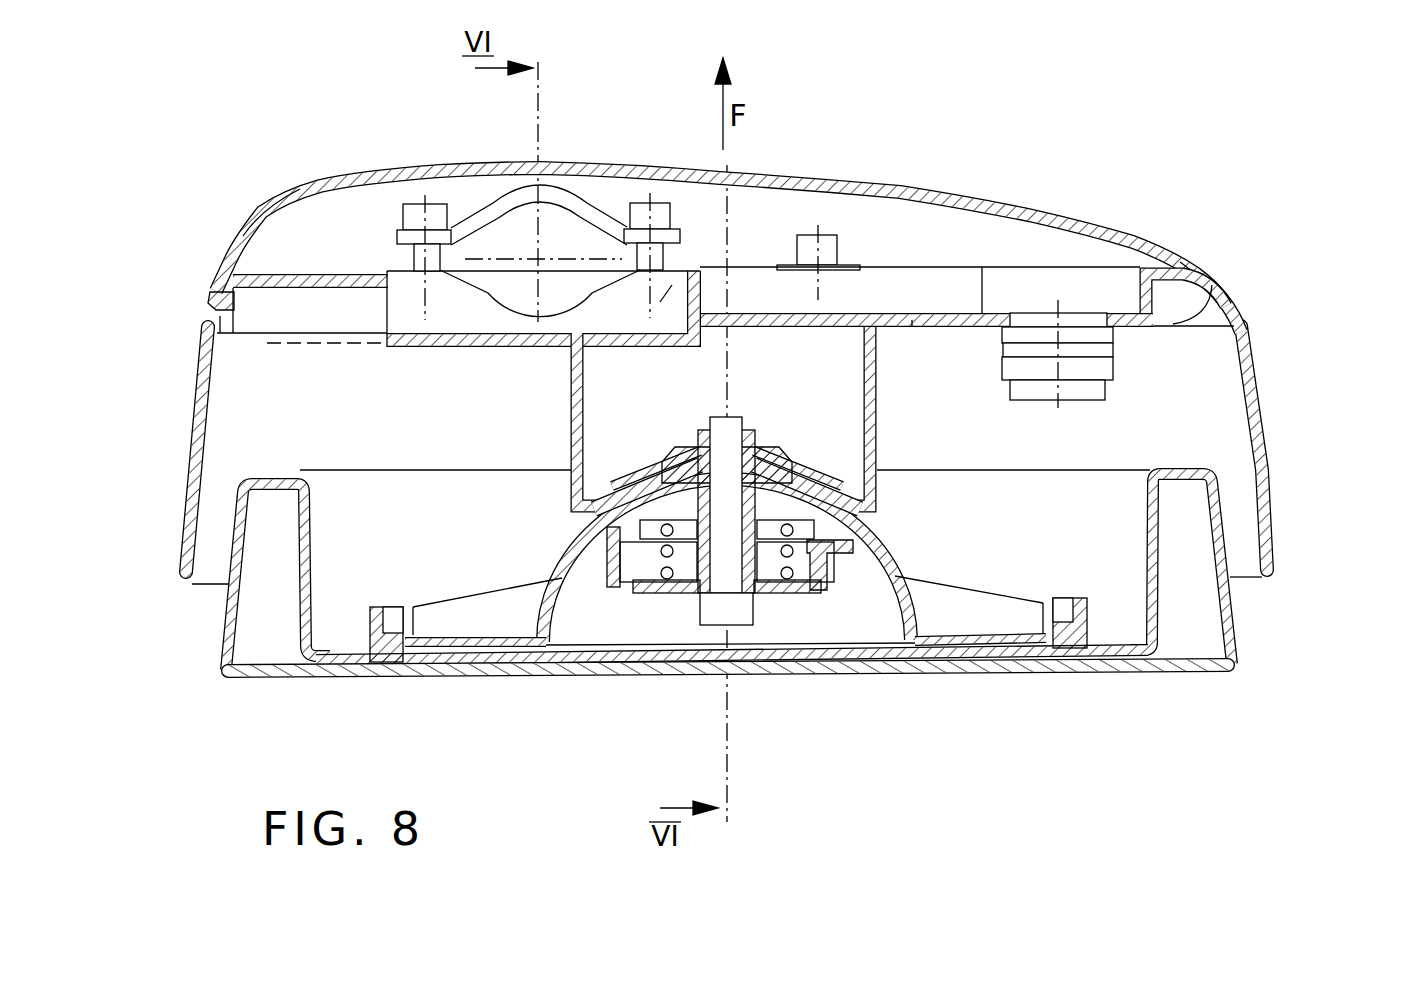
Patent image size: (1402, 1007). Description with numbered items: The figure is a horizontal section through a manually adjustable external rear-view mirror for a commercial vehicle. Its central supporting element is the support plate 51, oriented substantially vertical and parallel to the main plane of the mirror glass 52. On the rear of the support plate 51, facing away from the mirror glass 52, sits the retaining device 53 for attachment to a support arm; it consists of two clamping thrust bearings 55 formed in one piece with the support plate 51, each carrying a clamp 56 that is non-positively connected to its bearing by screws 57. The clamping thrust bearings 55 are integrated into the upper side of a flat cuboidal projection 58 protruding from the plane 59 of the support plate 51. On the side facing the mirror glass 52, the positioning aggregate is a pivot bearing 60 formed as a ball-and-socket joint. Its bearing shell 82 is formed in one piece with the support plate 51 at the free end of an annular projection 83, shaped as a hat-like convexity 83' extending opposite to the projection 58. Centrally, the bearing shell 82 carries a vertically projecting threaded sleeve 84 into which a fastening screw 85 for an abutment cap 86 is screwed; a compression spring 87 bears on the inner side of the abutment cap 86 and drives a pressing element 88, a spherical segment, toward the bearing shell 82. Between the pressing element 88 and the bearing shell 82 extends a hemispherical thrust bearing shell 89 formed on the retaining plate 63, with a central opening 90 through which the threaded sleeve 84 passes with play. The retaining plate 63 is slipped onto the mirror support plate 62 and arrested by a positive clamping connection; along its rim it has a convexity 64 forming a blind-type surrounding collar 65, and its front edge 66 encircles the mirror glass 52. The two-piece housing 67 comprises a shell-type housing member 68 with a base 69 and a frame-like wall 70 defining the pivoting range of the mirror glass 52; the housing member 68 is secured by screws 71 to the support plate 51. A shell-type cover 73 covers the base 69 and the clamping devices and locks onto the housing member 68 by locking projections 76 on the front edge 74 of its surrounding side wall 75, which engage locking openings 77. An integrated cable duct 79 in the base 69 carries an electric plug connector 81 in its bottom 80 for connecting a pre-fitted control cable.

The support plate 51 is at (484, 343).
The mirror glass 52 is at (703, 291).
The retaining device 53 is at (605, 192).
The clamping thrust bearing 55 is at (508, 322).
The clamp 56 is at (228, 293).
The screws 57 is at (420, 218).
The projection 58 is at (660, 302).
The plane of the support plate 59 is at (336, 342).
The pivot bearing 60 is at (888, 512).
The mirror support plate 62 is at (990, 632).
The retaining plate 63 is at (955, 662).
The convexity 64 is at (1206, 603).
The surrounding collar 65 is at (1093, 485).
The front edge 66 is at (1237, 670).
The housing 67 is at (1266, 332).
The housing member 68 is at (1232, 440).
The base 69 is at (920, 243).
The wall 70 is at (1250, 384).
The screws 71 is at (828, 246).
The cover 73 is at (916, 182).
The front edge 74 is at (222, 285).
The side wall 75 is at (255, 232).
The locking projections 76 is at (1180, 308).
The locking openings 77 is at (1212, 301).
The cable duct 79 is at (1072, 282).
The bottom of the cable duct 80 is at (912, 324).
The plug connector 81 is at (1100, 368).
The bearing shell 82 is at (795, 485).
The annular projection 83 is at (758, 416).
The hat-like convexity 83' is at (902, 398).
The threaded sleeve 84 is at (680, 475).
The fastening screw 85 is at (722, 430).
The abutment cap 86 is at (783, 597).
The compression spring 87 is at (790, 562).
The pressing element 88 is at (610, 519).
The thrust bearing shell 89 is at (880, 548).
The central opening 90 is at (772, 450).